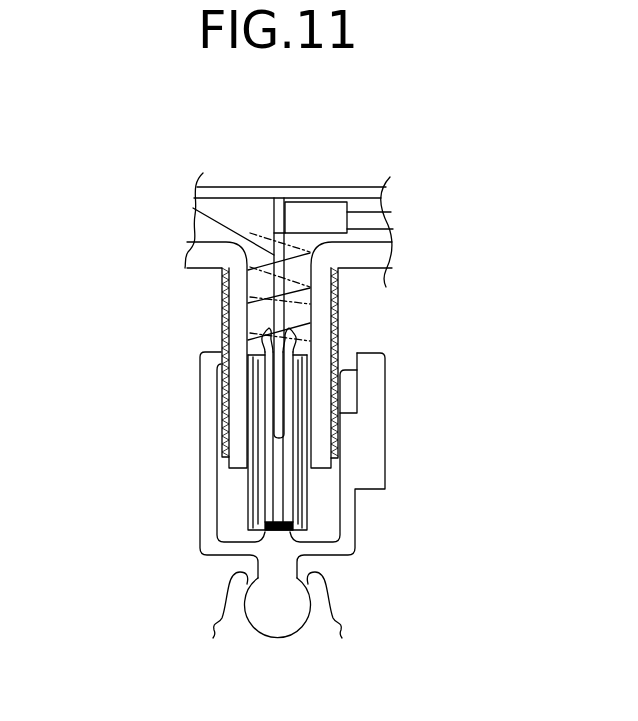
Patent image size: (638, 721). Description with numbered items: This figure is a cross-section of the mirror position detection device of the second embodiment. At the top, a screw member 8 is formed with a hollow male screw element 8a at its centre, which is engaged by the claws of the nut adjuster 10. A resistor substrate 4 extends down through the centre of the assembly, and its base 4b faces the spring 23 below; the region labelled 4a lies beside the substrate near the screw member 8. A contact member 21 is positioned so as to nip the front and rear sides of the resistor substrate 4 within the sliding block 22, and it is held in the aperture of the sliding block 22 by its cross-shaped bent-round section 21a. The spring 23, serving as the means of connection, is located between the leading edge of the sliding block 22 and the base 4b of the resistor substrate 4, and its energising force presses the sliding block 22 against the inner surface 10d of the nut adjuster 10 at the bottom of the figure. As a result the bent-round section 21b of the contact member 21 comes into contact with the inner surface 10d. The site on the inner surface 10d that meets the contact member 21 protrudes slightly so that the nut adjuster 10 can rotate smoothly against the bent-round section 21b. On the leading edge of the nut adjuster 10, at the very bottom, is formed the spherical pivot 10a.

The resistor substrate 4 is at (268, 224).
The passage branch 4a is at (193, 205).
The base of the resistor substrate 4b is at (273, 208).
The screw member 8 is at (259, 355).
The hollow male screw element 8a is at (221, 322).
The nut adjuster 10 is at (283, 503).
The spherical pivot 10a is at (297, 614).
The inner surface of the nut adjuster 10d is at (302, 554).
The contact member 21 is at (292, 462).
The cross-shaped bent-round section 21a is at (291, 333).
The bent-round section 21b is at (287, 519).
The sliding block 22 is at (300, 431).
The spring 23 is at (312, 305).